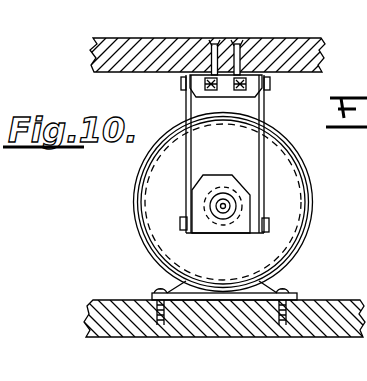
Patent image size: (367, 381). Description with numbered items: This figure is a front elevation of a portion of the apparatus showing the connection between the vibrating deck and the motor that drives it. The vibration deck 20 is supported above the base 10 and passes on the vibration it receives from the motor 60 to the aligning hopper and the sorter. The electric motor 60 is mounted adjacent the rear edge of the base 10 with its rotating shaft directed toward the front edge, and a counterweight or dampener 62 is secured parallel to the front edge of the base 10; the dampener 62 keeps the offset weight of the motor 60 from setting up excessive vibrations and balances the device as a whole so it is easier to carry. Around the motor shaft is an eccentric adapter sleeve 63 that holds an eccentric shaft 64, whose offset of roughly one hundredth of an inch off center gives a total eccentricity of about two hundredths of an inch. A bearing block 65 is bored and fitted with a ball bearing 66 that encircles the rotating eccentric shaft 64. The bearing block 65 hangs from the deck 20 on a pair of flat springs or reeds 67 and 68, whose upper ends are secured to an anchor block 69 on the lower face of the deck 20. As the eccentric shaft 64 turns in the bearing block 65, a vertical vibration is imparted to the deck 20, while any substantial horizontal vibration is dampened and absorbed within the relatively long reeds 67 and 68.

The base 10 is at (214, 337).
The vibration deck 20 is at (160, 31).
The electric motor 60 is at (150, 192).
The counterweight or dampener 62 is at (298, 296).
The eccentric adapter sleeve 63 is at (236, 178).
The eccentric shaft 64 is at (221, 212).
The bearing block 65 is at (240, 178).
The ball bearing 66 is at (236, 207).
The flat spring or reed 67 is at (185, 103).
The flat spring or reed 68 is at (265, 106).
The anchor block 69 is at (227, 97).